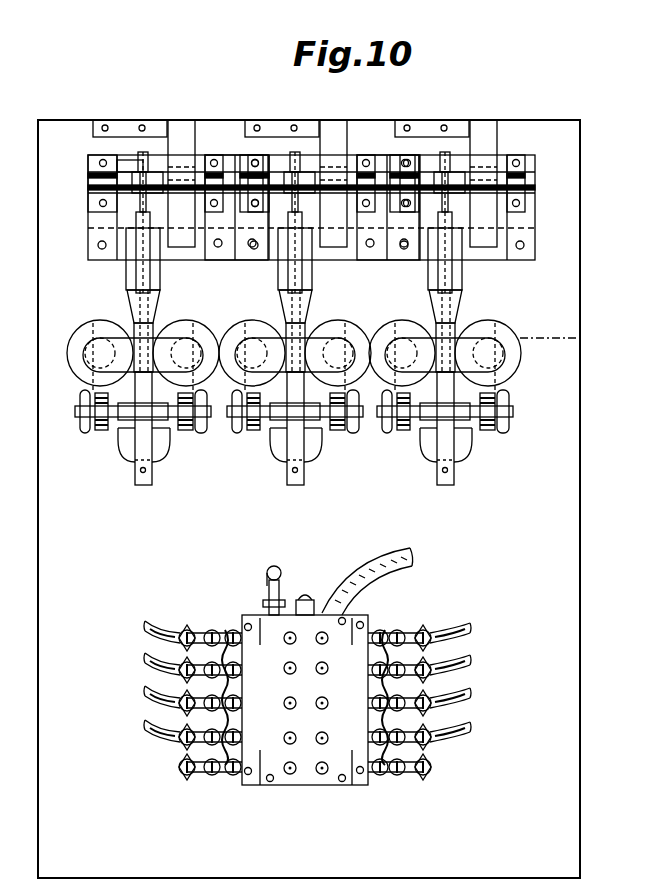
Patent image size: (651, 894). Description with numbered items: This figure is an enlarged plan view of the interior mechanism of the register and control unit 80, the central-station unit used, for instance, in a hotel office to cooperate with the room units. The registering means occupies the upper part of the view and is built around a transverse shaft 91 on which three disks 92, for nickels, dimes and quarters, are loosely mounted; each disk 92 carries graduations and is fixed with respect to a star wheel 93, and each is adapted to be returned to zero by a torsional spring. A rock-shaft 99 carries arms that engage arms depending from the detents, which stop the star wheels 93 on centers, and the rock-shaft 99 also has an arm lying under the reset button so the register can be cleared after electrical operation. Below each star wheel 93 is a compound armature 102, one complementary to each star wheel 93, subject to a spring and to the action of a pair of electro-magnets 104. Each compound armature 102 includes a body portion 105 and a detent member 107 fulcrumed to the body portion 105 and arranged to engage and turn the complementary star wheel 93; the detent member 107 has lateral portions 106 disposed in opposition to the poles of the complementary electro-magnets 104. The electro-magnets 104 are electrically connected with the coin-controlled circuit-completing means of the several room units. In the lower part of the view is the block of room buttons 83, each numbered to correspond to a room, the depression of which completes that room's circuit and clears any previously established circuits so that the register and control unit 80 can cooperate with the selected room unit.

The register and control unit 80 is at (580, 525).
The button 83 is at (322, 667).
The transverse shaft 91 is at (115, 197).
The disk 92 is at (187, 133).
The star wheel 93 is at (148, 152).
The rock-shaft 99 is at (125, 160).
The compound armature 102 is at (172, 342).
The electro-magnet 104 is at (102, 311).
The body portion 105 is at (143, 448).
The lateral portion 106 is at (160, 294).
The detent member 107 is at (152, 273).